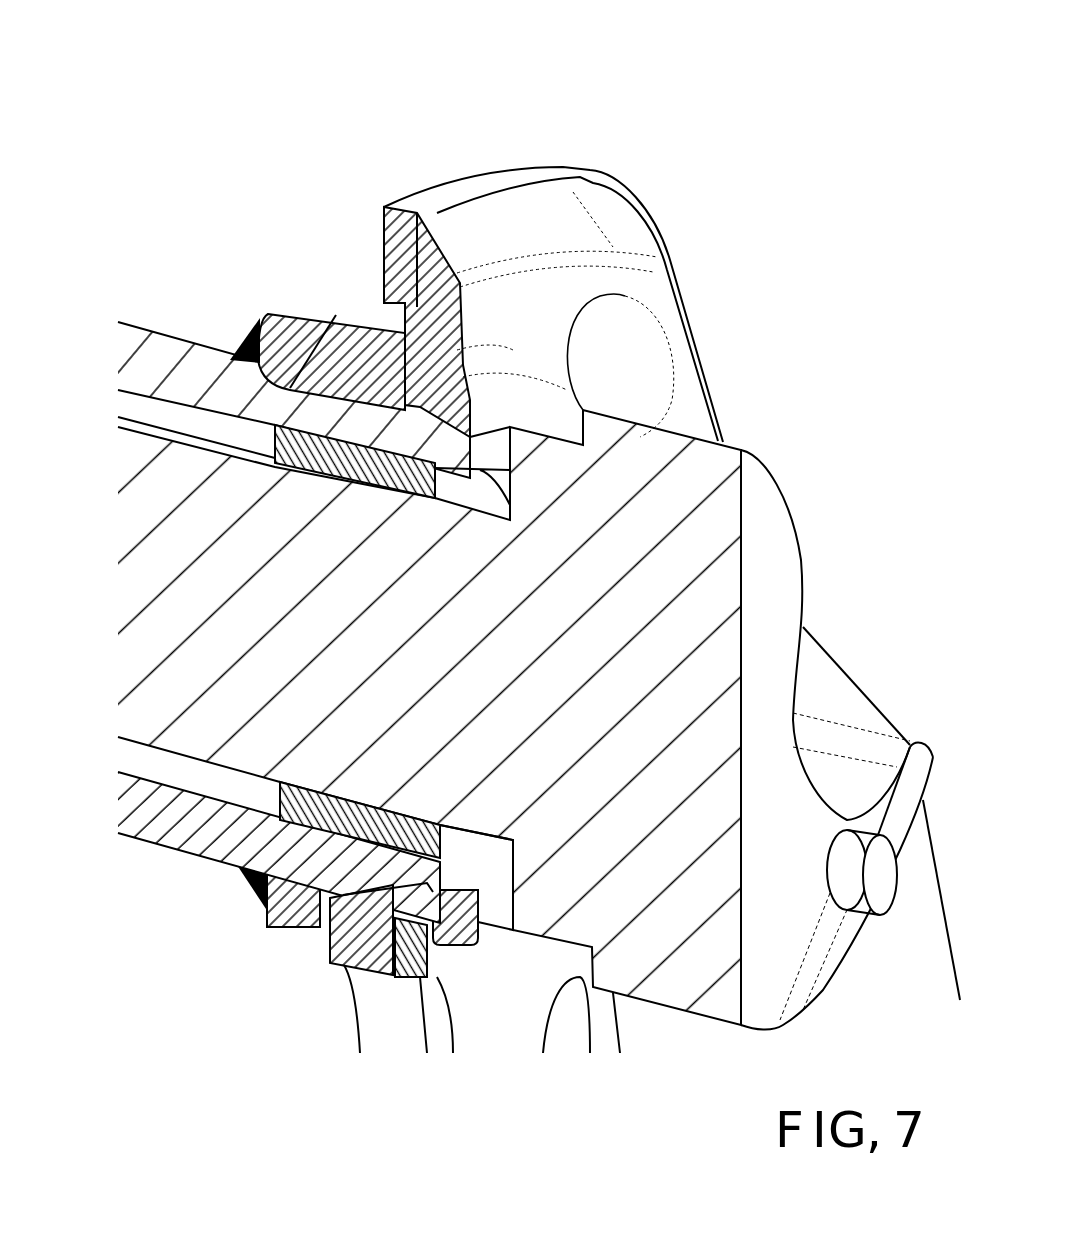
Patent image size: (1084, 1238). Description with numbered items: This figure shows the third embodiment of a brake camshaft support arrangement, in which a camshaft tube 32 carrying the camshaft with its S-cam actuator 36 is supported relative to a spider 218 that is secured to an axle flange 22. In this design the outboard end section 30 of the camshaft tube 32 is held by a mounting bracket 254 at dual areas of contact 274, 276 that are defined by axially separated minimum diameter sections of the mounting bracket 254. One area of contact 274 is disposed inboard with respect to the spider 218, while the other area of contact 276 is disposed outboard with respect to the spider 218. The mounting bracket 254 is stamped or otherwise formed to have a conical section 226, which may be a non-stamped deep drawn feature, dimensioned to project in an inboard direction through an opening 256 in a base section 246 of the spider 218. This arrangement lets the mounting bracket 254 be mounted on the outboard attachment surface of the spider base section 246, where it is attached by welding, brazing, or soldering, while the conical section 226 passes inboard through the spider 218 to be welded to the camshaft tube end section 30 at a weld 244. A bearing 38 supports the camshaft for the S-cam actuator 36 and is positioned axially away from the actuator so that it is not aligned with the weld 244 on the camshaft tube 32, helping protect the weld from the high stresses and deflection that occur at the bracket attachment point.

The axle flange 22 is at (343, 947).
The outboard end section of camshaft tube 30 is at (383, 873).
The camshaft tube 32 is at (130, 357).
The S-cam actuator 36 is at (780, 488).
The bearing 38 is at (373, 470).
The spider 218 is at (415, 957).
The conical section 226 is at (327, 315).
The weld 244 is at (238, 347).
The base section 246 is at (467, 183).
The mounting bracket 254 is at (518, 310).
The opening 256 is at (397, 317).
The area of contact 274 is at (340, 322).
The area of contact 276 is at (465, 412).